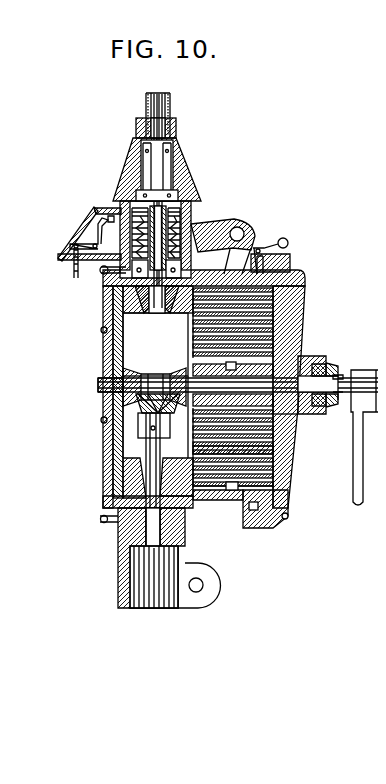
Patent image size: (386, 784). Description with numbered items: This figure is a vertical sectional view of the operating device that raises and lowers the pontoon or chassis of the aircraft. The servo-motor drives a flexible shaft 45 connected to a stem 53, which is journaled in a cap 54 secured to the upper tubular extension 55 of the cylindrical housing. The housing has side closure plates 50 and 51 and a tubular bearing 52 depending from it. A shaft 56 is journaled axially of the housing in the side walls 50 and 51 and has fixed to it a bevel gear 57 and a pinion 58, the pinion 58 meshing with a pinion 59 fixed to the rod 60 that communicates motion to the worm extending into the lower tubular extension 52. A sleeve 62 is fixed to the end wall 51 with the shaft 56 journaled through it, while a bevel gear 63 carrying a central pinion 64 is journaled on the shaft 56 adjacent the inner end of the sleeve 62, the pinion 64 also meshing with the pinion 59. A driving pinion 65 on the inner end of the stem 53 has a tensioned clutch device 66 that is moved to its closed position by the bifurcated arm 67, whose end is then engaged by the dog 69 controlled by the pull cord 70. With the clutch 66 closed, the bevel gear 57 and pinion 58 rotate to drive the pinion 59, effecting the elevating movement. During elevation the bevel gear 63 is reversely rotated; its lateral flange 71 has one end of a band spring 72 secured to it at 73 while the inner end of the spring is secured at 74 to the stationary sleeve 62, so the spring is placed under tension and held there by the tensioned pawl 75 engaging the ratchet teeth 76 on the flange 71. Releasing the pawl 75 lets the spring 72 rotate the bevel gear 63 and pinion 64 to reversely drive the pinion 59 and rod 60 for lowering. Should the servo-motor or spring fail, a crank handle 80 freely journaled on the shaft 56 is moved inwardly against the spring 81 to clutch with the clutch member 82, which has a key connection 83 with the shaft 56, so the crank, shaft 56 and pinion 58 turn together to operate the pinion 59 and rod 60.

The flexible shaft 45 is at (160, 101).
The stem 53 is at (152, 163).
The cap 54 is at (185, 181).
The upper tubular extension 55 is at (183, 219).
The bifurcated arm 67 is at (222, 216).
The tensioned pawl 75 is at (253, 240).
The dog 69 is at (82, 226).
The pull cord 70 is at (64, 262).
The tensioned clutch device 66 is at (100, 274).
The side closure plate 50 is at (193, 388).
The driving pinion 65 is at (107, 300).
The lateral flange 71 is at (262, 292).
The side closure plate 51 is at (291, 306).
The spring attachment point 74 is at (262, 334).
The bevel gear 57 is at (111, 345).
The bevel gear 63 is at (185, 317).
The spring 81 is at (325, 367).
The pinion 58 is at (122, 366).
The central pinion 64 is at (163, 366).
The pinion 59 is at (97, 413).
The sleeve 62 is at (290, 348).
The clutch member 82 is at (316, 355).
The key connection 83 is at (320, 398).
The crank handle 80 is at (353, 442).
The shaft 56 is at (293, 408).
The band spring 72 is at (250, 450).
The spring attachment point 73 is at (213, 490).
The ratchet teeth 76 is at (250, 516).
The rod 60 is at (110, 527).
The tubular bearing 52 is at (120, 547).